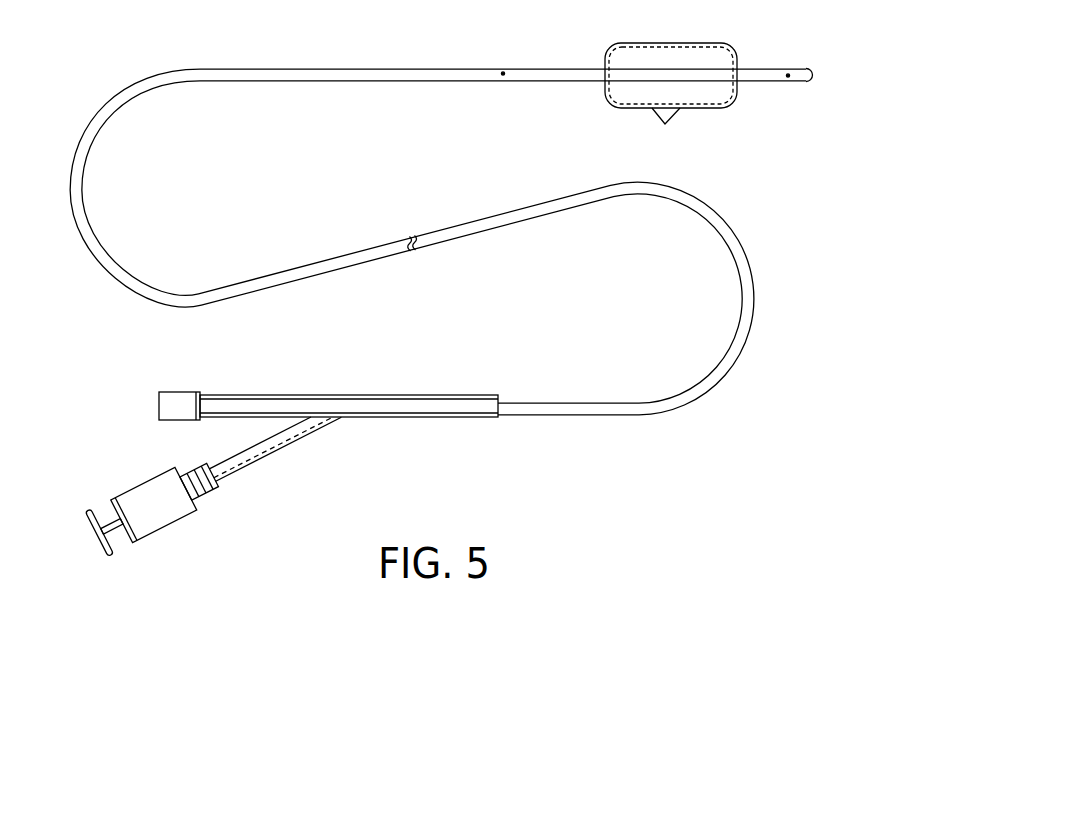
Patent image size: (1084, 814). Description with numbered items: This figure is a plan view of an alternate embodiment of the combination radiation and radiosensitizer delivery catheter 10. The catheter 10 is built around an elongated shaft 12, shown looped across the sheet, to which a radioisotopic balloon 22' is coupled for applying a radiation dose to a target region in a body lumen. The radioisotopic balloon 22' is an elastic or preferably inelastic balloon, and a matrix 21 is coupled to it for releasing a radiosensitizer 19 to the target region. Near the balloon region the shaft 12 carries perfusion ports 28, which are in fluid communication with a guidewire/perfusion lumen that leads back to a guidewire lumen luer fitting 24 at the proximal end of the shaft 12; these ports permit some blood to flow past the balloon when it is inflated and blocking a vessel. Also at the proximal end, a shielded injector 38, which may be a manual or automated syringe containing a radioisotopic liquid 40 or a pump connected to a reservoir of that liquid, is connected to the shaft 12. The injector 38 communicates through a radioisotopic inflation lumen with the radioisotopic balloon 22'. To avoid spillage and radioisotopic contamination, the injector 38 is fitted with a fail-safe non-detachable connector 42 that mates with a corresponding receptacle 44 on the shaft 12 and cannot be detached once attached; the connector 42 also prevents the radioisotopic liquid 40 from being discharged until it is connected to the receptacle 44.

The combination radiation and radiosensitizer delivery catheter 10 is at (777, 316).
The shaft 12 is at (318, 265).
The radiosensitizer 19 is at (664, 131).
The matrix 21 is at (706, 43).
The radioisotopic balloon 22' is at (671, 52).
The guidewire lumen luer fitting 24 is at (185, 392).
The perfusion ports 28 is at (503, 80).
The shielded injector 38 is at (148, 488).
The radioisotopic liquid 40 is at (147, 534).
The fail-safe non-detachable connector 42 is at (202, 502).
The receptacle 44 is at (218, 493).